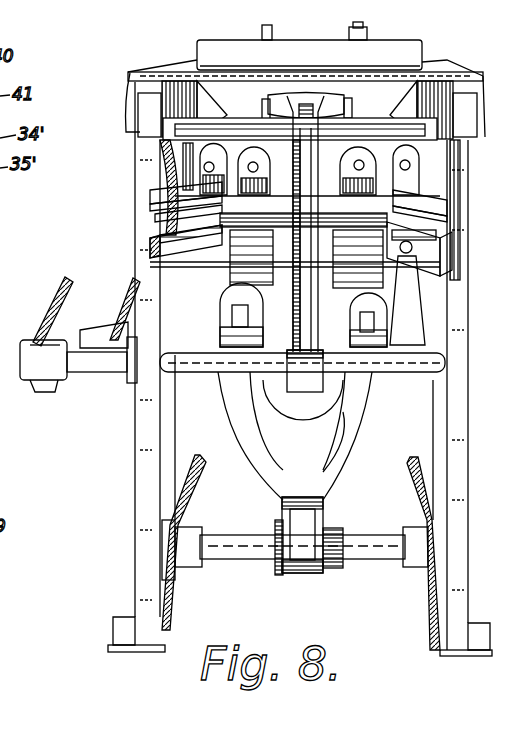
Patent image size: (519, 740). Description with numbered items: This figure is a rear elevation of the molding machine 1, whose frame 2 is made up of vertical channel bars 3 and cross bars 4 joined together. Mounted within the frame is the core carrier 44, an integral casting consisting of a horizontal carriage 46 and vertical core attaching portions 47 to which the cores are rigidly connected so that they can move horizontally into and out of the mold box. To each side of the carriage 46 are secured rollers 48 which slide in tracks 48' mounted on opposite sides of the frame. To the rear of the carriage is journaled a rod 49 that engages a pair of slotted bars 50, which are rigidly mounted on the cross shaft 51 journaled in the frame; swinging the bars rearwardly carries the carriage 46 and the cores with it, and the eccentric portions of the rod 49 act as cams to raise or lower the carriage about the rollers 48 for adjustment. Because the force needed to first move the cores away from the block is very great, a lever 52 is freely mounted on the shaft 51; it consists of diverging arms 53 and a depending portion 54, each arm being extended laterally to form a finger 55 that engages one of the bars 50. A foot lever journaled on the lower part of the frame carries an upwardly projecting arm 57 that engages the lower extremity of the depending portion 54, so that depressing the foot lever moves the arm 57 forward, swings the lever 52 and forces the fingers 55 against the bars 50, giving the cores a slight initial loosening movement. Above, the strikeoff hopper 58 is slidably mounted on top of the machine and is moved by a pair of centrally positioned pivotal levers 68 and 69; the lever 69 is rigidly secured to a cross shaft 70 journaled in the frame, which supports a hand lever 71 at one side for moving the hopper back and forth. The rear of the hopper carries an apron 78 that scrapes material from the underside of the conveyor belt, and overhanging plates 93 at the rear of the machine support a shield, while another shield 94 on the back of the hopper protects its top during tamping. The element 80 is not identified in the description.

The molding machine 1 is at (130, 496).
The frame 2 is at (135, 528).
The vertical channel bars 3 is at (448, 584).
The cross bars 4 is at (140, 135).
The core carrier 44 is at (155, 218).
The horizontal carriage 46 is at (447, 207).
The vertical core attaching portions 47 is at (260, 262).
The rollers 48 is at (134, 243).
The tracks 48' is at (159, 196).
The rod 49 is at (365, 248).
The slotted bars 50 is at (420, 230).
The cross shaft 51 is at (118, 310).
The lever 52 is at (318, 478).
The diverging arms 53 is at (301, 436).
The depending portion 54 is at (293, 485).
The finger 55 is at (232, 300).
The upwardly projecting arm 57 is at (310, 512).
The strikeoff hopper 58 is at (225, 95).
The pivotal lever 68 is at (305, 102).
The pivotal lever 69 is at (290, 176).
The cross shaft 70 is at (215, 374).
The hand lever 71 is at (58, 306).
The apron 78 is at (208, 40).
The bracket 80 is at (0, 244).
The overhanging plates 93 is at (158, 170).
The shield 94 is at (128, 74).